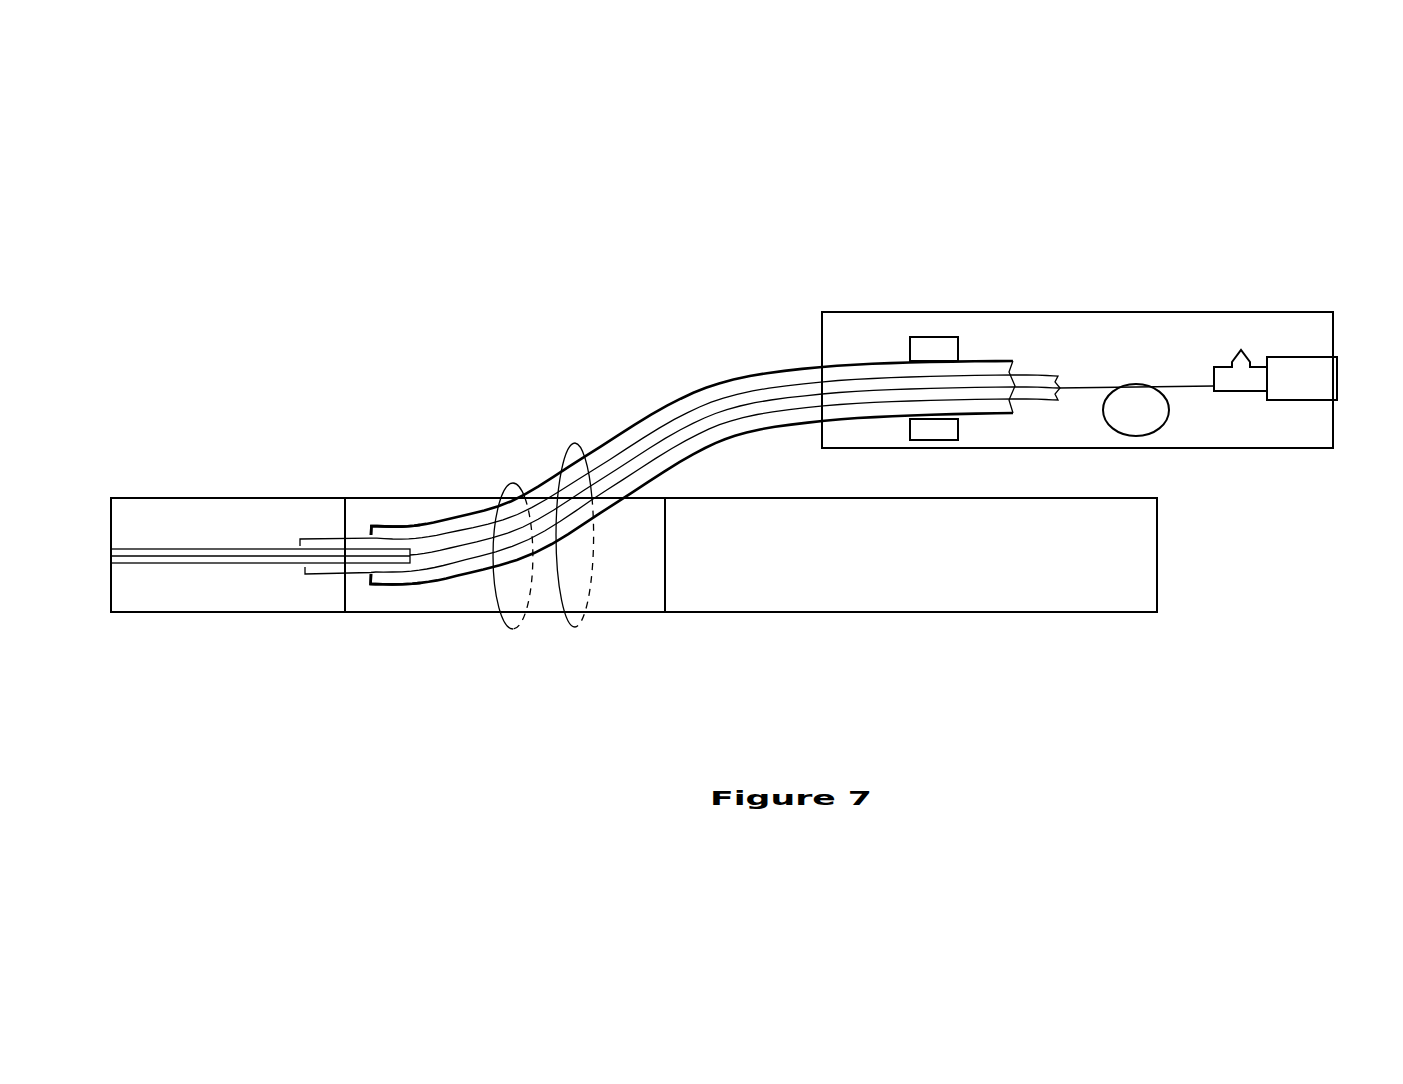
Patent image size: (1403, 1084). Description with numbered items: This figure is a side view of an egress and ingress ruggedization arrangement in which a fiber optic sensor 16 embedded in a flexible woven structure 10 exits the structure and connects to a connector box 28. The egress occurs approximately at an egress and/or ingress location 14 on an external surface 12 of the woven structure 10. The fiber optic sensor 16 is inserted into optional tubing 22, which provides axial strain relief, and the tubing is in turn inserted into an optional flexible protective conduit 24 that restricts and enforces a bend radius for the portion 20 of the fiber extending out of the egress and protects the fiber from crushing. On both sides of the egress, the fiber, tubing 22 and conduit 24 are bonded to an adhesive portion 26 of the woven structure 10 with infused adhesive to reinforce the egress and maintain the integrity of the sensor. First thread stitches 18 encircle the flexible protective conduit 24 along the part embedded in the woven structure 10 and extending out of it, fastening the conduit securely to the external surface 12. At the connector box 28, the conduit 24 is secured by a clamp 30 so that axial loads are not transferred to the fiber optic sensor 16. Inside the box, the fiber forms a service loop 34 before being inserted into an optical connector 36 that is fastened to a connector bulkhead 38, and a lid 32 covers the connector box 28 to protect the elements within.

The flexible woven structure 10 is at (1012, 566).
The external surface 12 is at (877, 496).
The egress and/or ingress location 14 is at (587, 500).
The fiber optic sensor 16 is at (218, 551).
The first thread stitches 18 is at (508, 481).
The portion of the fiber extending out of the egress and/or ingress 20 is at (664, 447).
The tubing 22 is at (318, 528).
The flexible protective conduit 24 is at (710, 381).
The adhesive portion 26 is at (380, 497).
The connector box 28 is at (833, 309).
The clamp 30 is at (945, 333).
The lid 32 is at (1107, 309).
The service loop 34 is at (1157, 437).
The optical connector 36 is at (1242, 349).
The connector bulkhead 38 is at (1291, 402).